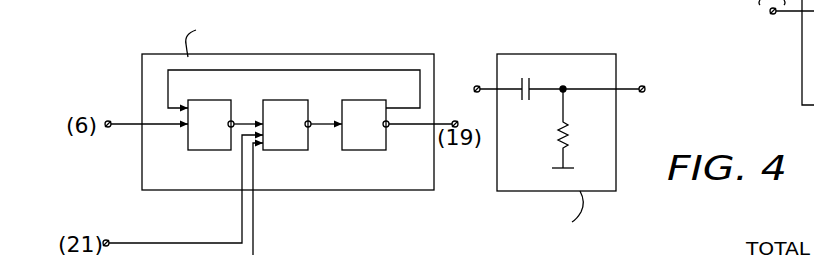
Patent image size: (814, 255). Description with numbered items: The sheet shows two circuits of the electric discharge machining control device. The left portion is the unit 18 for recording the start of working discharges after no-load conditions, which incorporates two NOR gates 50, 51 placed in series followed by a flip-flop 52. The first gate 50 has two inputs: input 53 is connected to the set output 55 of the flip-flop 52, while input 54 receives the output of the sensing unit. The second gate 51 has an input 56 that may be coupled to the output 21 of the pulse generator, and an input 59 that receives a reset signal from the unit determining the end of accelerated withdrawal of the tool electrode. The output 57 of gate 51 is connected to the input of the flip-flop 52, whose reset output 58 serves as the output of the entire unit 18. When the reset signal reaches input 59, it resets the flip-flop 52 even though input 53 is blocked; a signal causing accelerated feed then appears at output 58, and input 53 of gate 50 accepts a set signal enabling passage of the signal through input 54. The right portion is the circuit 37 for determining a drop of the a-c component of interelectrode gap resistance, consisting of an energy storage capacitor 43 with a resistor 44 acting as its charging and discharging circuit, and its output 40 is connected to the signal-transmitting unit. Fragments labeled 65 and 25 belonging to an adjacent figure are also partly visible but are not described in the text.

In FIG. 4, the unit for recording the start of working discharges 18 is at (383, 50).
In FIG. 4, the NOR gate 50 is at (209, 125).
In FIG. 4, the NOR gate 51 is at (285, 125).
In FIG. 4, the flip-flop 52 is at (364, 125).
In FIG. 4, the input of gate 50 53 is at (184, 105).
In FIG. 4, the input of gate 50 54 is at (164, 128).
In FIG. 4, the set output of the flip-flop 55 is at (401, 107).
In FIG. 4, the input of gate 51 56 is at (249, 123).
In FIG. 4, the output of gate 51 57 is at (325, 123).
In FIG. 4, the reset output of the flip-flop 58 is at (410, 127).
In FIG. 4, the input of gate 51 59 is at (256, 179).
In FIG. 4, the output of the pulse generator 21 is at (183, 189).
In FIG. 4, the circuit for determining a drop of an a-c component of resistance 37 is at (622, 141).
In FIG. 4, the output of circuit 37 40 is at (564, 73).
In FIG. 4, the energy storage capacitor 43 is at (523, 101).
In FIG. 4, the resistor 44 is at (567, 137).
In FIG. 6, the element 65 is at (620, 247).
In FIG. 6, the element 25 is at (672, 252).